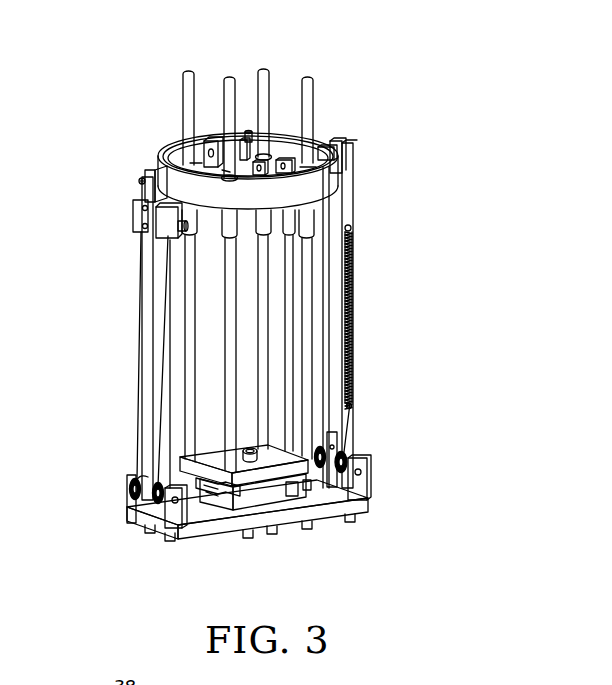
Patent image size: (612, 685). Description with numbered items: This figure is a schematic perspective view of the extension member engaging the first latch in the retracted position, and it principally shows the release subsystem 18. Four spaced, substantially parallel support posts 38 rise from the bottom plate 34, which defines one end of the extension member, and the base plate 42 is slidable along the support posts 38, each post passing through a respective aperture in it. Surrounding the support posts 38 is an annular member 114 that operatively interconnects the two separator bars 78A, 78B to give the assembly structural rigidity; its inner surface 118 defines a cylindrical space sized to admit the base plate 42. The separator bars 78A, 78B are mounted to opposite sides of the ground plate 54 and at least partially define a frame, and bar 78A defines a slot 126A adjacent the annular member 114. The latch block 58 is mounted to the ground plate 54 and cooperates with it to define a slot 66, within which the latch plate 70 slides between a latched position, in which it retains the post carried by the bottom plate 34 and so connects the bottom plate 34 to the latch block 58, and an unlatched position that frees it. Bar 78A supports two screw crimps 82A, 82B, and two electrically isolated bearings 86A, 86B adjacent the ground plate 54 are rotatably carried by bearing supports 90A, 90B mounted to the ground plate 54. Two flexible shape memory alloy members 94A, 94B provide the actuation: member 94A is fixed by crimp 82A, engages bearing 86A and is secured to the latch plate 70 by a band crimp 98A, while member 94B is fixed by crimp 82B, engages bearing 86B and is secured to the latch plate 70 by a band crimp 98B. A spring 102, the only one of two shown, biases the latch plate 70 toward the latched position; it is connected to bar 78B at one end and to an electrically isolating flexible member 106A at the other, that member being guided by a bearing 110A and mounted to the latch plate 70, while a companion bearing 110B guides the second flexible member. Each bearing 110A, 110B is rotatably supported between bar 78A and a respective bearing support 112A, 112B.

The release subsystem 18 is at (60, 505).
The bottom plate 34 is at (268, 465).
The support posts 38 is at (227, 88).
The base plate 42 is at (213, 170).
The ground plate 54 is at (363, 507).
The latch block 58 is at (295, 494).
The slot 66 is at (270, 497).
The latch plate 70 is at (215, 505).
The separator bar 78A is at (153, 335).
The separator bar 78B is at (348, 210).
The screw crimp 82A is at (130, 215).
The screw crimp 82B is at (160, 185).
The electrically isolated bearing 86A is at (132, 497).
The electrically isolated bearing 86B is at (158, 505).
The bearing support 90A is at (128, 477).
The bearing support 90B is at (175, 530).
The shape memory alloy member 94A is at (137, 400).
The shape memory alloy member 94B is at (162, 370).
The band crimp 98A is at (135, 478).
The band crimp 98B is at (210, 505).
The spring 102 is at (355, 308).
The flexible member 106A is at (328, 450).
The bearing 110A is at (350, 458).
The bearing 110B is at (318, 448).
The bearing support 112A is at (367, 480).
The bearing support 112B is at (355, 403).
The annular member 114 is at (332, 142).
The inner surface 118 is at (250, 140).
The slot 126A is at (147, 225).